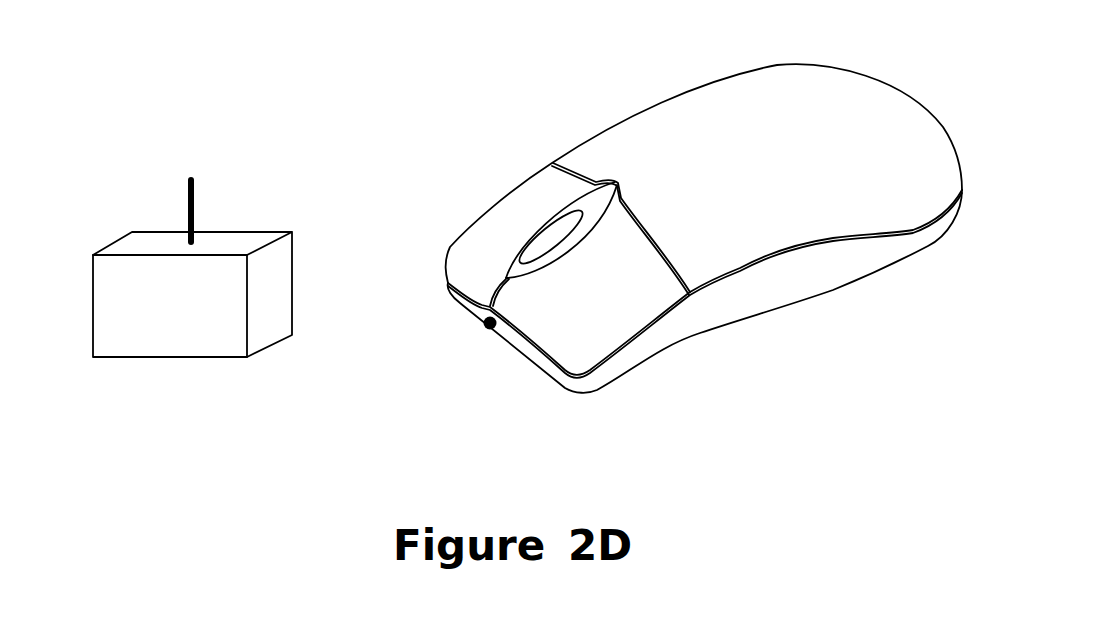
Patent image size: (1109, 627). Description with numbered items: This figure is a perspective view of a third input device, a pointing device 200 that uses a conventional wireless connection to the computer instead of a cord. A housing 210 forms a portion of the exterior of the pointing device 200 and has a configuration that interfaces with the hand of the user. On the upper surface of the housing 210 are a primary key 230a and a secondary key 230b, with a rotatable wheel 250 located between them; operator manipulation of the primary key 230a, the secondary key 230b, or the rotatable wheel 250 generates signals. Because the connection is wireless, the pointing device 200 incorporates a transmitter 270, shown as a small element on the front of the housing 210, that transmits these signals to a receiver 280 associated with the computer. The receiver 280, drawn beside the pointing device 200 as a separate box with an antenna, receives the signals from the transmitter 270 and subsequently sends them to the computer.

The pointing device 200 is at (460, 209).
The housing 210 is at (805, 78).
The primary key 230a is at (593, 342).
The secondary key 230b is at (476, 248).
The rotatable wheel 250 is at (563, 232).
The transmitter 270 is at (491, 331).
The receiver 280 is at (213, 348).